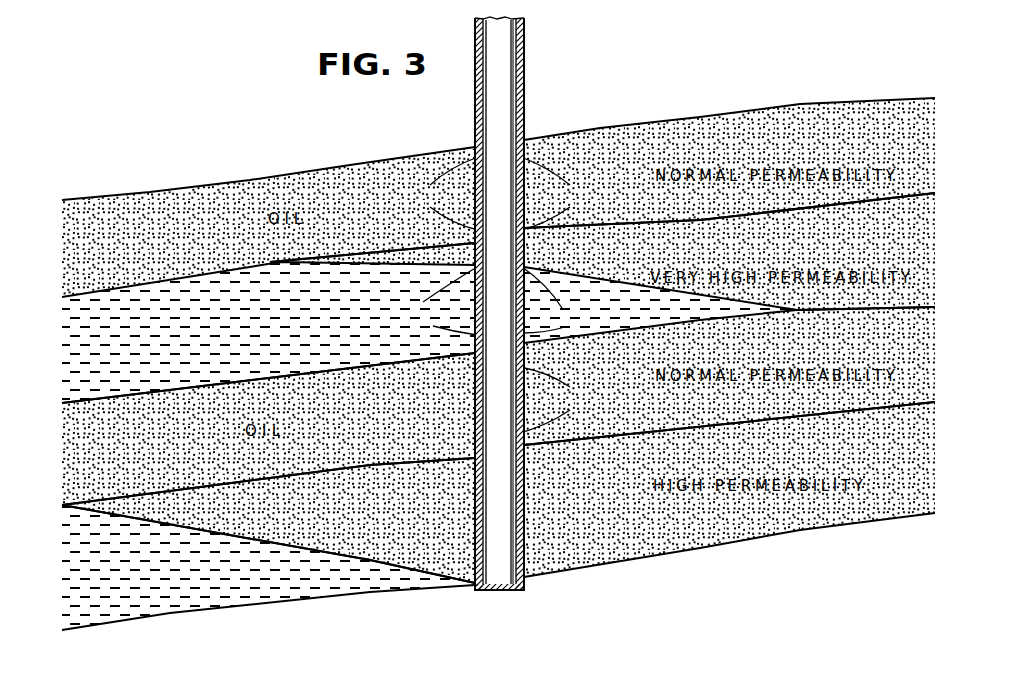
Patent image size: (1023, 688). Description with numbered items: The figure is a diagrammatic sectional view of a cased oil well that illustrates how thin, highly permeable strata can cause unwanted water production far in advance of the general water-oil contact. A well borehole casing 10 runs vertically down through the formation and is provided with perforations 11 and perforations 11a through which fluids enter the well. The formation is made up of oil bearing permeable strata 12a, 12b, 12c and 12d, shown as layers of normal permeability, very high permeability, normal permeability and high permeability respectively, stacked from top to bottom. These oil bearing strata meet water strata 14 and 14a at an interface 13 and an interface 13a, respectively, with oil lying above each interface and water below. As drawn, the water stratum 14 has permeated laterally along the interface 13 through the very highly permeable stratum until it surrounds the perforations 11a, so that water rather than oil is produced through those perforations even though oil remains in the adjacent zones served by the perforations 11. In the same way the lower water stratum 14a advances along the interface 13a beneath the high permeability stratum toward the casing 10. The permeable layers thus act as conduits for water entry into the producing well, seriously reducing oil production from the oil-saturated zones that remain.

The well borehole casing 10 is at (527, 93).
The perforations 11 is at (571, 402).
The perforations 11a is at (562, 312).
The oil bearing permeable stratum 12a is at (890, 137).
The oil bearing permeable stratum 12b is at (905, 236).
The oil bearing permeable stratum 12c is at (902, 337).
The oil bearing permeable stratum 12d is at (905, 447).
The interface 13 is at (598, 274).
The interface 13a is at (290, 536).
The water stratum 14 is at (86, 353).
The water stratum 14a is at (190, 592).